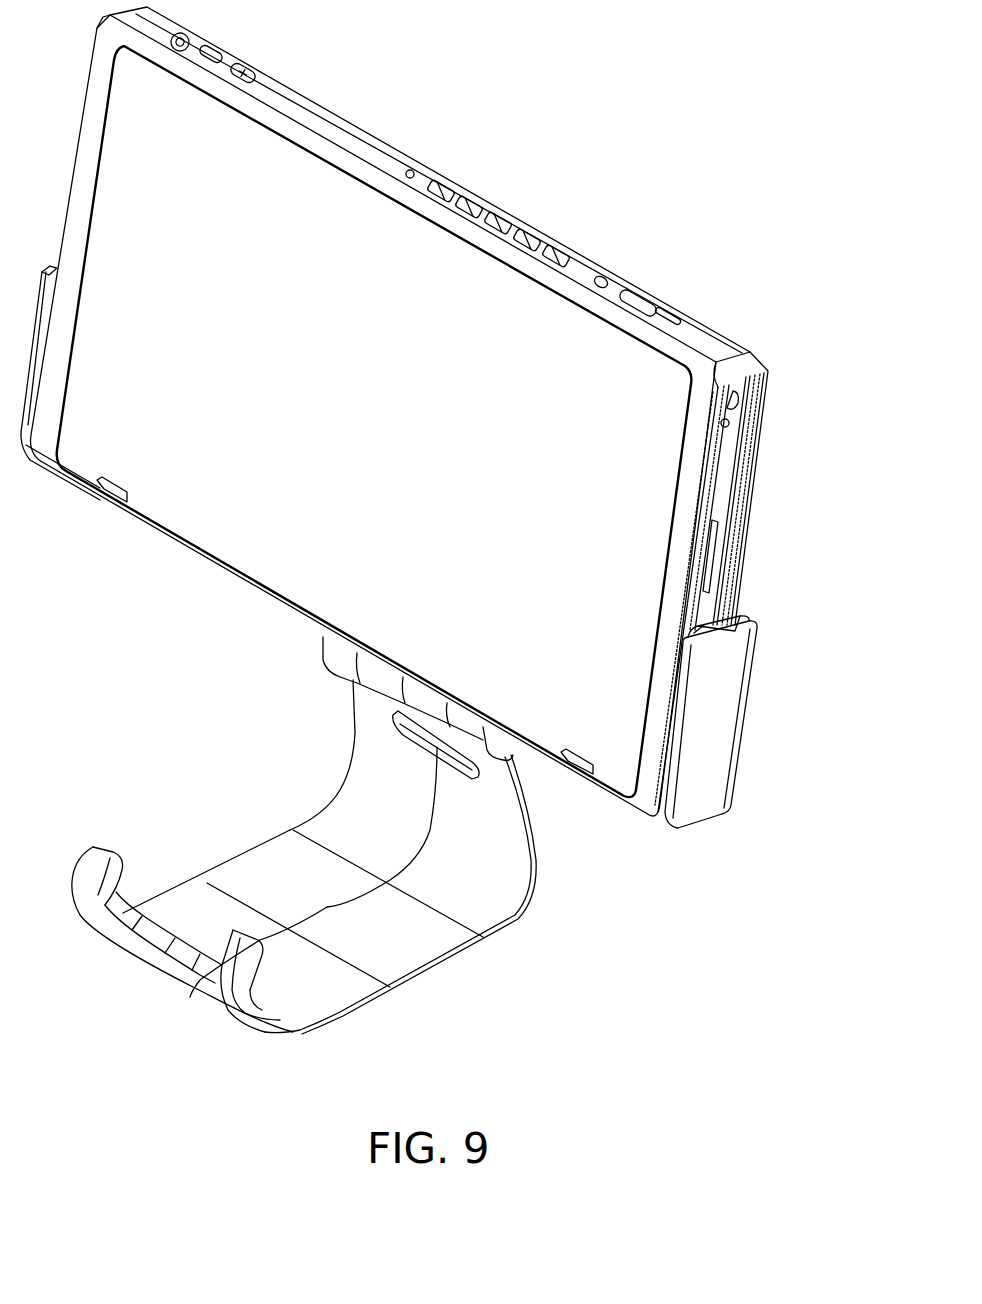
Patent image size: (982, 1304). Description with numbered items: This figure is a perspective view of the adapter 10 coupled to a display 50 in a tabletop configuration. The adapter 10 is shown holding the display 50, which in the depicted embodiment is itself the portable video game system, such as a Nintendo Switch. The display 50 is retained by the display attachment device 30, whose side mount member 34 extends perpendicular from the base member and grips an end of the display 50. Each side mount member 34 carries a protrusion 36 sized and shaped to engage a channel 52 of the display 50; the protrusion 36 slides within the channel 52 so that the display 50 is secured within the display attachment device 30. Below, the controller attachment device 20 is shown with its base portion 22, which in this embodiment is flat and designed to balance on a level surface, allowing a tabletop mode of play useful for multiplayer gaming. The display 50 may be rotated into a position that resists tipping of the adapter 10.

The adapter 10 is at (435, 411).
The controller attachment device 20 is at (307, 705).
The base portion 22 is at (277, 887).
The display attachment device 30 is at (786, 713).
The side mount member 34 is at (703, 762).
The protrusion 36 is at (703, 628).
The display 50 is at (605, 383).
The channel 52 is at (738, 440).